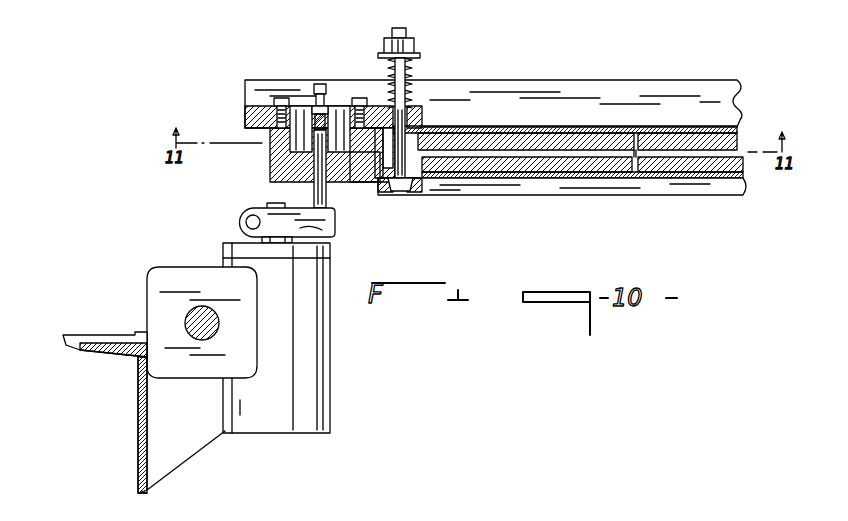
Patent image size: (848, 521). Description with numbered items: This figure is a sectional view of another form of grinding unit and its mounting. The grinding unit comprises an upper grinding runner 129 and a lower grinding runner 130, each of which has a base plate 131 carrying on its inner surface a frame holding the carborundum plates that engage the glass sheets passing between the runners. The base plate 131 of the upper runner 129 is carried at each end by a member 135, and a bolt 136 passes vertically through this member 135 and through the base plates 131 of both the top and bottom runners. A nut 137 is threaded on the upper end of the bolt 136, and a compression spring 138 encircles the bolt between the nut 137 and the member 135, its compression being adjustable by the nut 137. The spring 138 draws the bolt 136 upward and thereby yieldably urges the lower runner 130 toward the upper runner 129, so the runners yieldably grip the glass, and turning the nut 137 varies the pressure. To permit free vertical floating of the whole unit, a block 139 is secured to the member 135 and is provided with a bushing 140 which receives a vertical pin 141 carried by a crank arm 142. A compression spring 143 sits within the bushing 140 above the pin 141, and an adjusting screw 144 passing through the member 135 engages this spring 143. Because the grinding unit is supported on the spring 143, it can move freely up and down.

The upper grinding runner 129 is at (483, 124).
The lower grinding runner 130 is at (607, 180).
The base plate 131 is at (647, 130).
The member 135 is at (415, 120).
The bolt 136 is at (416, 184).
The nut 137 is at (414, 46).
The compression spring 138 is at (380, 86).
The block 139 is at (278, 152).
The bushing 140 is at (344, 176).
The vertical pin 141 is at (314, 192).
The crank arm 142 is at (336, 232).
The compression spring 143 is at (305, 112).
The adjusting screw 144 is at (318, 104).